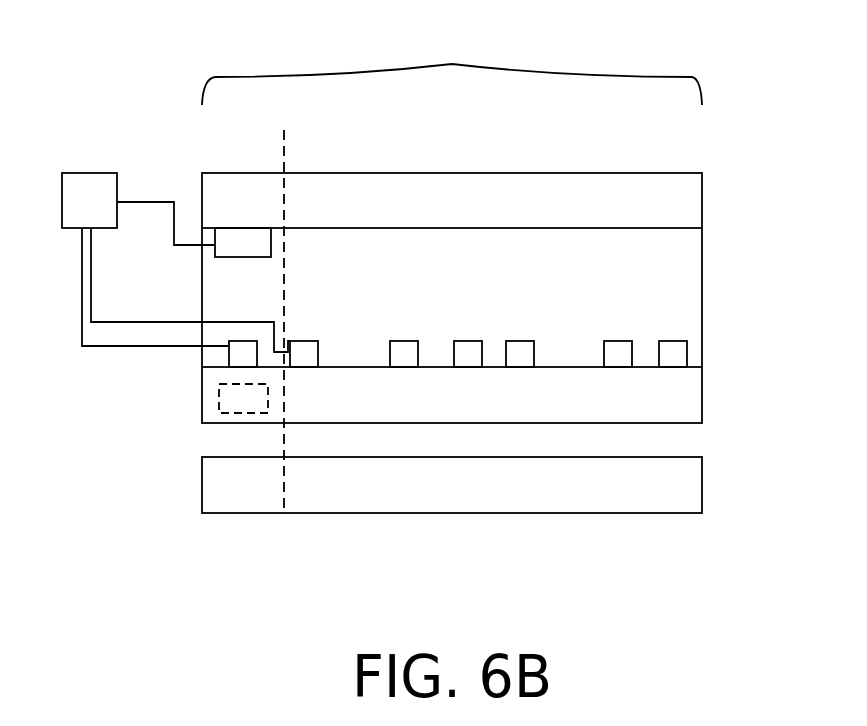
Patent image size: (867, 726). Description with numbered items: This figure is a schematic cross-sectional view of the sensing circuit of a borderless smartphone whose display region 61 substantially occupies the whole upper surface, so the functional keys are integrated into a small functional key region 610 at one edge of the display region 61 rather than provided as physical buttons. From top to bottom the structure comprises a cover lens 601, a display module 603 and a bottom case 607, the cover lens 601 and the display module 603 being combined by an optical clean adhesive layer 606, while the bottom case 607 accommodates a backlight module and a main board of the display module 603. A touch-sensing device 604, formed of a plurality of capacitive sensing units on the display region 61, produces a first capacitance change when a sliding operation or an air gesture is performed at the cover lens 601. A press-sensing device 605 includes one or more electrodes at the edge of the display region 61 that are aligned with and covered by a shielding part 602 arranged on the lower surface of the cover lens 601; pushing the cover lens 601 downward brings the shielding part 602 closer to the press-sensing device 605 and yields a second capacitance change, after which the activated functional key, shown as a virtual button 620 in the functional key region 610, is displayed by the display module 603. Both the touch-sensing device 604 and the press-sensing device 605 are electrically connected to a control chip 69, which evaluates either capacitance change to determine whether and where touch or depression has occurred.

The display region 61 is at (452, 63).
The cover lens 601 is at (687, 195).
The shielding part 602 is at (242, 240).
The display module 603 is at (687, 395).
The touch-sensing device 604 is at (673, 355).
The press-sensing device 605 is at (237, 340).
The optical clean adhesive layer 606 is at (222, 275).
The bottom case 607 is at (687, 487).
The functional key region 610 is at (239, 168).
The virtual button 620 is at (258, 398).
The control chip 69 is at (88, 187).